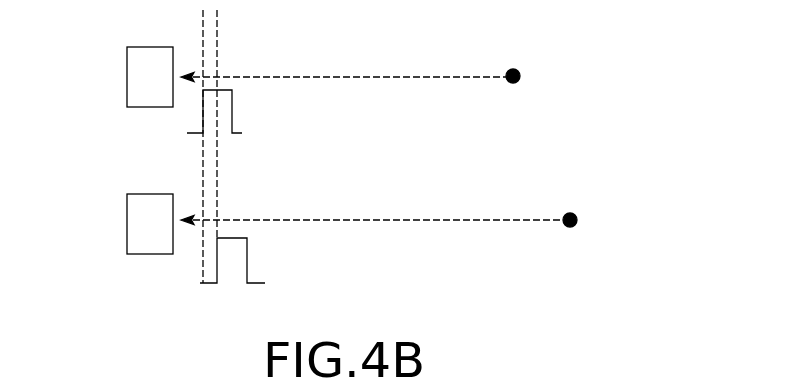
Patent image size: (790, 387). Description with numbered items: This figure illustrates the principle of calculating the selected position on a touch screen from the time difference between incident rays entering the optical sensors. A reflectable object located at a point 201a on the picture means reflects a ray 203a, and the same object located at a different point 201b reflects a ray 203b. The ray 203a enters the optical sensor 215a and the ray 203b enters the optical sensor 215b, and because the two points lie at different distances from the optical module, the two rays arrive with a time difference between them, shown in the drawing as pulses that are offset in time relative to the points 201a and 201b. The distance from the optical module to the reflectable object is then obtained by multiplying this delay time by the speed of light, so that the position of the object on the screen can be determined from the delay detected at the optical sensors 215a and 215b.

The optical sensor 215a is at (117, 78).
The optical sensor 215b is at (117, 222).
The point 201a is at (521, 76).
The point 201b is at (578, 220).
The ray 203a is at (242, 133).
The ray 203b is at (265, 283).